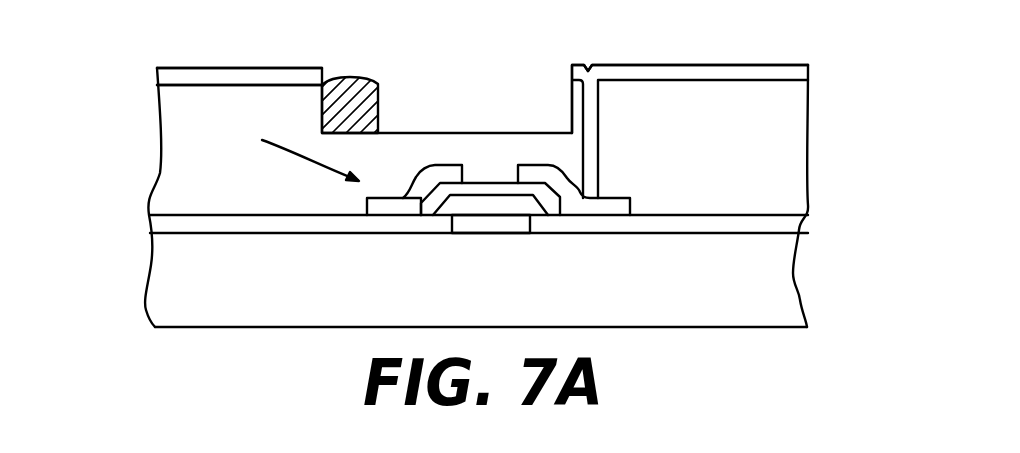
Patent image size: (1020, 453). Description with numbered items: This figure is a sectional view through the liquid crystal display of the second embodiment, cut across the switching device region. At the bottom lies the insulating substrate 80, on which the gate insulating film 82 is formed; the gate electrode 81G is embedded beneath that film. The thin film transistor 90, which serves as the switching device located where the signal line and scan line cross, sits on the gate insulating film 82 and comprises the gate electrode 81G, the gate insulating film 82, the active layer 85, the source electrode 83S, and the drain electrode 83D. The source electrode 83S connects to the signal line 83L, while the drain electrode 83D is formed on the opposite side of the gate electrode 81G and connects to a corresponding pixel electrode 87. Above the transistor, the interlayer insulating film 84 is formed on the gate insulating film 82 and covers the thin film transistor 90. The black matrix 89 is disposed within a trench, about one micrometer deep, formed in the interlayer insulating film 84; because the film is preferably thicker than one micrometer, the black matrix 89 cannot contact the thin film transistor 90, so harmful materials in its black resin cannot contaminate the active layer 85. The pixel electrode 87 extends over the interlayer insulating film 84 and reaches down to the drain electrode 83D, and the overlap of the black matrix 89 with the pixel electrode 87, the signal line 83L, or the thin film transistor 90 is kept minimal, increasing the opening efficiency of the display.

The insulating substrate 80 is at (782, 275).
The gate electrode 81G is at (493, 225).
The gate insulating film 82 is at (788, 218).
The source electrode 83S is at (413, 182).
The drain electrode 83D is at (583, 208).
The signal line 83L is at (388, 212).
The interlayer insulating film 84 is at (165, 176).
The active layer 85 is at (485, 188).
The pixel electrode 87 is at (237, 97).
The black matrix 89 is at (370, 100).
The thin film transistor 90 is at (288, 151).